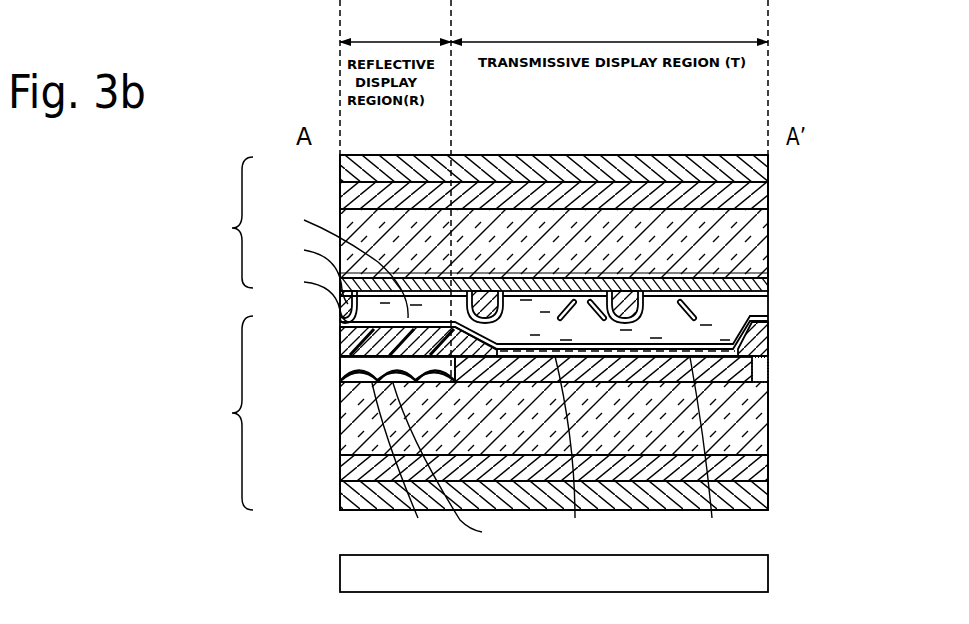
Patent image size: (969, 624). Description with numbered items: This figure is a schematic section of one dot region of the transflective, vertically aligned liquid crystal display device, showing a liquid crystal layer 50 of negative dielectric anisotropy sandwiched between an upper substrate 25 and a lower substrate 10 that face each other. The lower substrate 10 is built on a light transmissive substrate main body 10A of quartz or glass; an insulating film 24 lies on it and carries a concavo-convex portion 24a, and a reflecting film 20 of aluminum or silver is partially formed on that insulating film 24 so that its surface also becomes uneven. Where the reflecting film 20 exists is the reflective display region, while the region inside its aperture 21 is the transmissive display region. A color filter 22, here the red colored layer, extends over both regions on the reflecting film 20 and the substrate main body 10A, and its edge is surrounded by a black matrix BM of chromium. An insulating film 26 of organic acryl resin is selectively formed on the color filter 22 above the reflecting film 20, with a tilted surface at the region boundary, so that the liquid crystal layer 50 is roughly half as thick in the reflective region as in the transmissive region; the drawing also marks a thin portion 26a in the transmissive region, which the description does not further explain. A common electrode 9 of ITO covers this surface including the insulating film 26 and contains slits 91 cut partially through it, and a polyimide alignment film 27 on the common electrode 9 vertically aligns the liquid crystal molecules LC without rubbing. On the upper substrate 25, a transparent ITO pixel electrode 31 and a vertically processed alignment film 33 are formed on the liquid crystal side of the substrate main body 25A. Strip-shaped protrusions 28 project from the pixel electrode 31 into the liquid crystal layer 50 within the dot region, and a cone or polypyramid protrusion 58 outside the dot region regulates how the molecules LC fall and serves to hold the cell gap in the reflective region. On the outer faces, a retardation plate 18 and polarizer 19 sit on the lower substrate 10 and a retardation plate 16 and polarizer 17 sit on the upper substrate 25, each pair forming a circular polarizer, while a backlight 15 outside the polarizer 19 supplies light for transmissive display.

The polarizer 17 is at (768, 158).
The retardation plate 16 is at (768, 192).
The substrate main body 25A is at (768, 226).
The alignment film 33 is at (768, 268).
The pixel electrode 31 is at (768, 285).
The liquid crystal layer 50 is at (768, 298).
The protrusions 28 is at (487, 292).
The liquid crystal molecules LC is at (768, 316).
The common electrode 9 is at (345, 324).
The insulating film 26 is at (345, 346).
The transparent conductive layer 26a is at (768, 338).
The black matrix BM is at (345, 360).
The reflecting film 20 is at (340, 375).
The concavo-convex portion 24a is at (375, 390).
The color filter 22 is at (768, 420).
The substrate main body 10A is at (768, 440).
The retardation plate 18 is at (768, 470).
The polarizer 19 is at (768, 494).
The backlight 15 is at (768, 572).
The insulating film 24 is at (400, 467).
The aperture 21 is at (453, 467).
The slits 91 is at (500, 378).
The protrusion 58 is at (311, 270).
The alignment film 27 is at (311, 295).
The upper substrate 25 is at (224, 222).
The lower substrate 10 is at (225, 413).